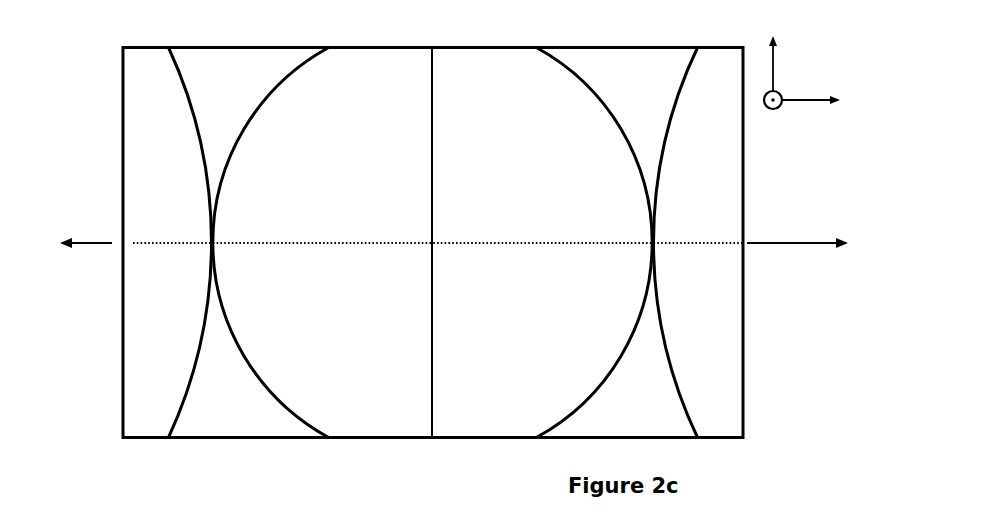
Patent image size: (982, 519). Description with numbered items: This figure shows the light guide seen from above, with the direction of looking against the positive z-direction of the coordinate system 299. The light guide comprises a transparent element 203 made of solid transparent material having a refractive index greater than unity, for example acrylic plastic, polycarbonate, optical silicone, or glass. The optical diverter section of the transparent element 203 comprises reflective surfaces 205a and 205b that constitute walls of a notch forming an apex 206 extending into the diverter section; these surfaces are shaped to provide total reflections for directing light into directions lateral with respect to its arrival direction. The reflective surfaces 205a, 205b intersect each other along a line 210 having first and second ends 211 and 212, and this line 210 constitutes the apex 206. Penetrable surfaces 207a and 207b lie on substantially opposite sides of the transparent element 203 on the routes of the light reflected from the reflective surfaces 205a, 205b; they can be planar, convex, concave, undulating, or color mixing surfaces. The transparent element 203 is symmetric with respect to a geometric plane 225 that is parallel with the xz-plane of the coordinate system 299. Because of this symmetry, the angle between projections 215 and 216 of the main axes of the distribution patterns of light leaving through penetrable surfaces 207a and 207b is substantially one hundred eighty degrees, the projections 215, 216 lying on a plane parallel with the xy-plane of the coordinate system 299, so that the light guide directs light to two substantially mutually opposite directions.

The transparent element 203 is at (257, 92).
The reflective surface 205a is at (334, 226).
The reflective surface 205b is at (573, 182).
The penetrable surface 207a is at (179, 186).
The penetrable surface 207b is at (720, 206).
The apex 206 is at (432, 92).
The line 210 is at (432, 315).
The first end 211 is at (432, 48).
The second end 212 is at (432, 438).
The geometric plane 225 is at (488, 243).
The projection 215 is at (85, 243).
The projection 216 is at (768, 243).
The coordinate system 299 is at (830, 72).